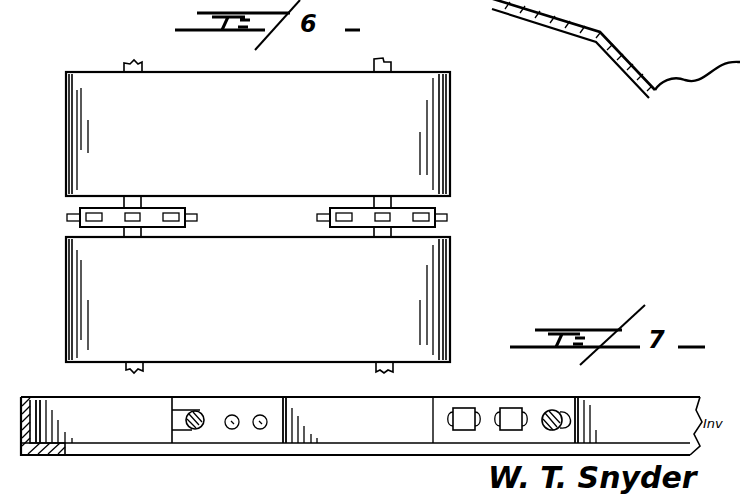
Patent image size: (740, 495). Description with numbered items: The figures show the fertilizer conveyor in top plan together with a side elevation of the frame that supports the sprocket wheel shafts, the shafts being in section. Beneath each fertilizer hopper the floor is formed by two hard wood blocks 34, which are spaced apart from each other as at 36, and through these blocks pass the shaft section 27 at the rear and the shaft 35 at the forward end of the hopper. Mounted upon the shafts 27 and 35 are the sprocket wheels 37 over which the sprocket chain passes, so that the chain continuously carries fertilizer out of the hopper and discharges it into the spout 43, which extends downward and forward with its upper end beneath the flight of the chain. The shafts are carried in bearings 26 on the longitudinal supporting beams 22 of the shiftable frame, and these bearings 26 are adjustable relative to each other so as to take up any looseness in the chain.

In FIG. 7, the longitudinal supporting beam 22 is at (84, 452).
In FIG. 7, the bearing 26 is at (262, 438).
In FIG. 6, the shaft section 27 is at (131, 63).
In FIG. 7, the shaft section 27 is at (195, 430).
In FIG. 6, the hard wood block 34 is at (425, 142).
In FIG. 6, the shaft 35 is at (392, 60).
In FIG. 7, the shaft 35 is at (554, 409).
In FIG. 6, the space between blocks 36 is at (262, 210).
In FIG. 6, the sprocket wheel 37 is at (80, 220).
In FIG. 6, the spout 43 is at (567, 4).